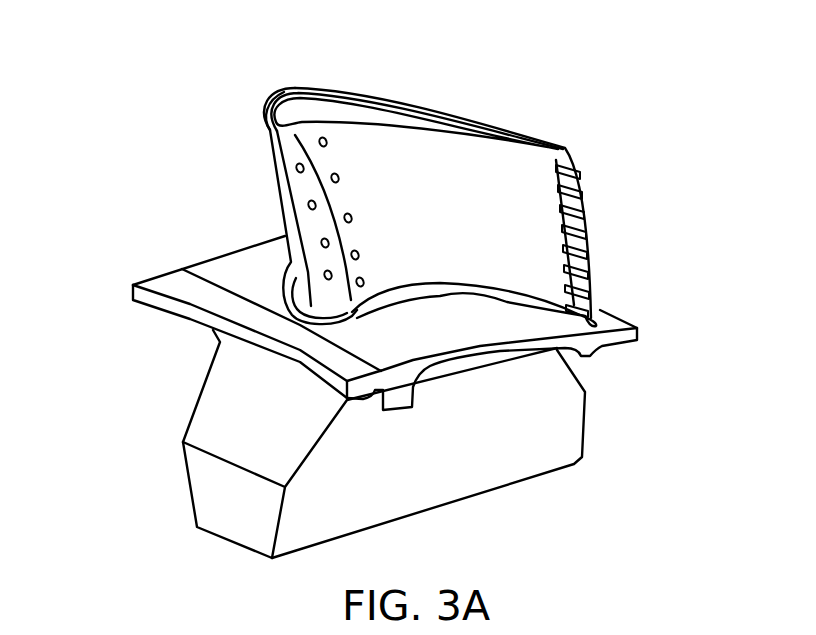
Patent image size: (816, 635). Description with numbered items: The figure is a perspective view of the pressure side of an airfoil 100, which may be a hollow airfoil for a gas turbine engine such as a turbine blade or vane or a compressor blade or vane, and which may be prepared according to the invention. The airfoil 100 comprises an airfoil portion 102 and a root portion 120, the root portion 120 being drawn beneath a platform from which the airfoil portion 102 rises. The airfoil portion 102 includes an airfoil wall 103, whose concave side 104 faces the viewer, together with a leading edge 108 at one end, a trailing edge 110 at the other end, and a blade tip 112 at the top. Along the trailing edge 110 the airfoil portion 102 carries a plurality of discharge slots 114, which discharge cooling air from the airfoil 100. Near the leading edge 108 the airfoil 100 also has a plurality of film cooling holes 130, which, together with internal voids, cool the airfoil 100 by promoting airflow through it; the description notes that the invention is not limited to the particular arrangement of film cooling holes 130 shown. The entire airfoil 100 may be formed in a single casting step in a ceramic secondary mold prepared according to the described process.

The airfoil 100 is at (122, 101).
The airfoil portion 102 is at (611, 155).
The airfoil wall 103 is at (452, 231).
The concave side 104 is at (533, 162).
The leading edge 108 is at (280, 163).
The trailing edge 110 is at (580, 190).
The blade tip 112 is at (274, 121).
The discharge slots 114 is at (578, 265).
The root portion 120 is at (368, 483).
The film cooling holes 130 is at (333, 260).